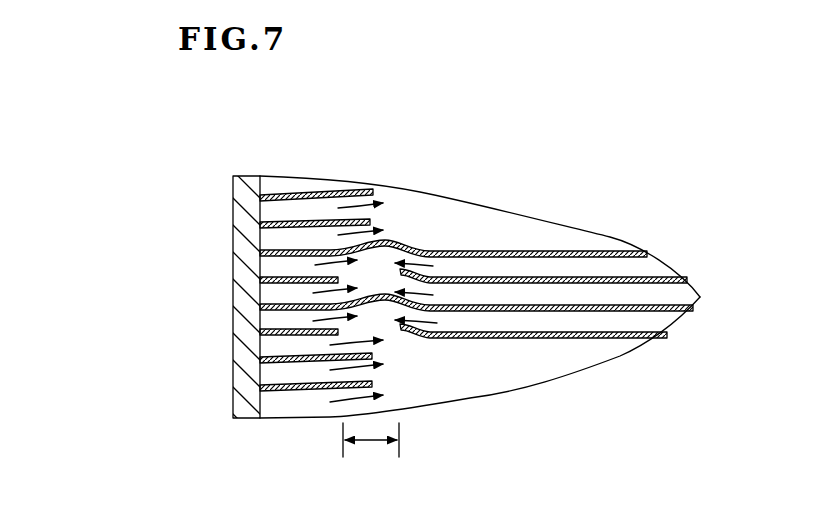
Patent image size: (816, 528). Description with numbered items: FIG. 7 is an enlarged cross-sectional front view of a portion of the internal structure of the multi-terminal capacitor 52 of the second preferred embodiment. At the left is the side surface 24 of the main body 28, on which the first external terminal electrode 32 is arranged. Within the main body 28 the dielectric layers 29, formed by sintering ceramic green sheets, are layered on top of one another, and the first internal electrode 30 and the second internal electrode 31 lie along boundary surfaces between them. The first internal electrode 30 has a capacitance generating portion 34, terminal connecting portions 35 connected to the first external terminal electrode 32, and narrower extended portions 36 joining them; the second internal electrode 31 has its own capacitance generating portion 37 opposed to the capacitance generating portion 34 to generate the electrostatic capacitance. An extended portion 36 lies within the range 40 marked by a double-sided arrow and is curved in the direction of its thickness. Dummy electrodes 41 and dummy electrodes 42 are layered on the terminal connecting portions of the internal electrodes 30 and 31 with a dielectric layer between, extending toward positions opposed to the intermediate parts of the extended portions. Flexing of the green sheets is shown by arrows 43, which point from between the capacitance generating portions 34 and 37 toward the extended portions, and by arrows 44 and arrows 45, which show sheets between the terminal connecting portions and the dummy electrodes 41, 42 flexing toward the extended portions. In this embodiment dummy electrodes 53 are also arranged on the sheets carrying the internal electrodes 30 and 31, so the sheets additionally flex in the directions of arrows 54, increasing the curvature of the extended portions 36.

The side surface 24 is at (255, 348).
The main body 28 is at (562, 222).
The dielectric layers 29 is at (297, 240).
The first internal electrode 30 is at (652, 253).
The second internal electrode 31 is at (688, 280).
The first external terminal electrode 32 is at (245, 220).
The capacitance generating portion 34 is at (541, 312).
The terminal connecting portions 35 is at (270, 298).
The extended portions 36 is at (385, 240).
The capacitance generating portion 37 is at (525, 278).
The range 40 is at (368, 441).
The dummy electrodes 41 is at (325, 263).
The dummy electrodes 42 is at (320, 355).
The arrows 43 is at (416, 268).
The arrows 44 is at (363, 193).
The arrows 45 is at (375, 408).
The multi-terminal capacitor 52 is at (178, 149).
The dummy electrodes 53 is at (263, 272).
The arrows 54 is at (316, 270).